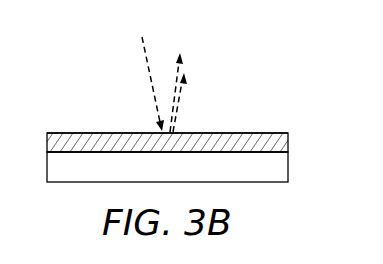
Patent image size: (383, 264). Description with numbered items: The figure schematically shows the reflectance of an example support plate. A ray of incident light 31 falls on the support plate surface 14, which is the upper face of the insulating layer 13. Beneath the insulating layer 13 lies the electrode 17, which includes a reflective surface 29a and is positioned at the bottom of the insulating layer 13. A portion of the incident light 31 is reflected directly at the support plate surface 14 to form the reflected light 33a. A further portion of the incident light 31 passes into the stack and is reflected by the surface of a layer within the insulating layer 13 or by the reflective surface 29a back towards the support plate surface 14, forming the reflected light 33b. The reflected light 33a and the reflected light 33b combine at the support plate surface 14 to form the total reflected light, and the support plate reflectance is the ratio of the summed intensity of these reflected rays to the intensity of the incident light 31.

The insulating layer 13 is at (283, 138).
The support plate surface 14 is at (276, 133).
The electrode 17 is at (278, 172).
The reflective surface 29a is at (289, 151).
The incident light 31 is at (150, 74).
The reflected light 33a is at (177, 77).
The reflected light 33b is at (180, 92).